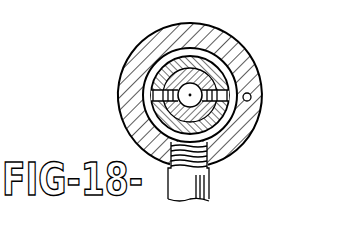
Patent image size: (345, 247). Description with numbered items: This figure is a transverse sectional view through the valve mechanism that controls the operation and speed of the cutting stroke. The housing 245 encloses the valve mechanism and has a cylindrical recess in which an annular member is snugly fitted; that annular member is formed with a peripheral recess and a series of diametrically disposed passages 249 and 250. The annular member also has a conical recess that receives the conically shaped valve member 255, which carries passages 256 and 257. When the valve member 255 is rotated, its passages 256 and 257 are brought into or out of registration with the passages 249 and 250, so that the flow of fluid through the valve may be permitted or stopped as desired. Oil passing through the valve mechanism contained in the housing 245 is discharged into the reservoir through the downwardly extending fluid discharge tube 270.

The housing 245 is at (233, 139).
The passage 249 is at (160, 105).
The passage 250 is at (190, 70).
The conically shaped portion 255 is at (222, 108).
The passage 256 is at (163, 78).
The passage 257 is at (233, 64).
The fluid discharge tube 270 is at (210, 191).